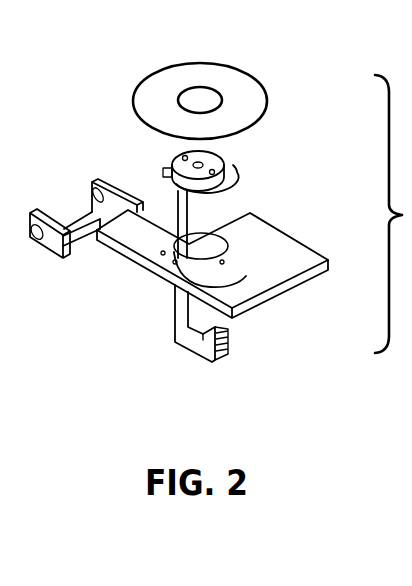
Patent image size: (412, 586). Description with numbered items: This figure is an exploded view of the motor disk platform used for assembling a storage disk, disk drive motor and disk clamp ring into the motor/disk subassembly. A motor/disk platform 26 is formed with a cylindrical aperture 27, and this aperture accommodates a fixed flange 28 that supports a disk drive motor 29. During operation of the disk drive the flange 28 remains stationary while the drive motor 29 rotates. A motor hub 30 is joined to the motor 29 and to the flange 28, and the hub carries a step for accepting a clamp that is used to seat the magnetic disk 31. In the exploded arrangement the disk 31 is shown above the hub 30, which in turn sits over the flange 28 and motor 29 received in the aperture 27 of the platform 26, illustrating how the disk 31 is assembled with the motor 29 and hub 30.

The motor/disk platform 26 is at (303, 257).
The cylindrical aperture 27 is at (205, 263).
The fixed flange 28 is at (233, 178).
The disk drive motor 29 is at (167, 170).
The motor hub 30 is at (222, 162).
The magnetic disk 31 is at (155, 93).